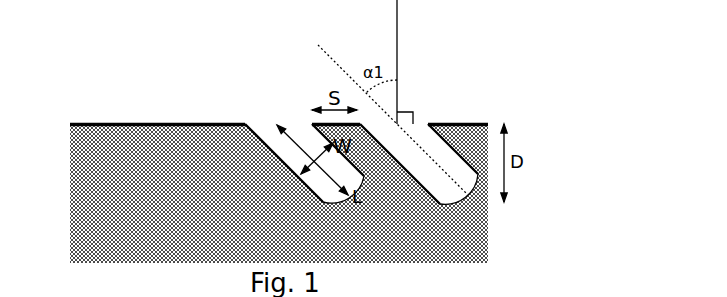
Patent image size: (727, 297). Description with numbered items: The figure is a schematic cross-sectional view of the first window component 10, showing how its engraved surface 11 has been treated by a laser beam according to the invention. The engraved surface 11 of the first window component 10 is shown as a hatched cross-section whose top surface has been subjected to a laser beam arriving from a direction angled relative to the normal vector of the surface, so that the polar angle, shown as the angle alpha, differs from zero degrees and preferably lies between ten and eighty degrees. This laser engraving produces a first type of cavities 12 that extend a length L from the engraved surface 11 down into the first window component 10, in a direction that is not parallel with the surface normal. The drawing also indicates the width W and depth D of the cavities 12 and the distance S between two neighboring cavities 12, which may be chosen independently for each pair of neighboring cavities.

The first window component 10 is at (443, 220).
The engraved surface 11 is at (152, 124).
The first type of cavities 12 is at (415, 147).